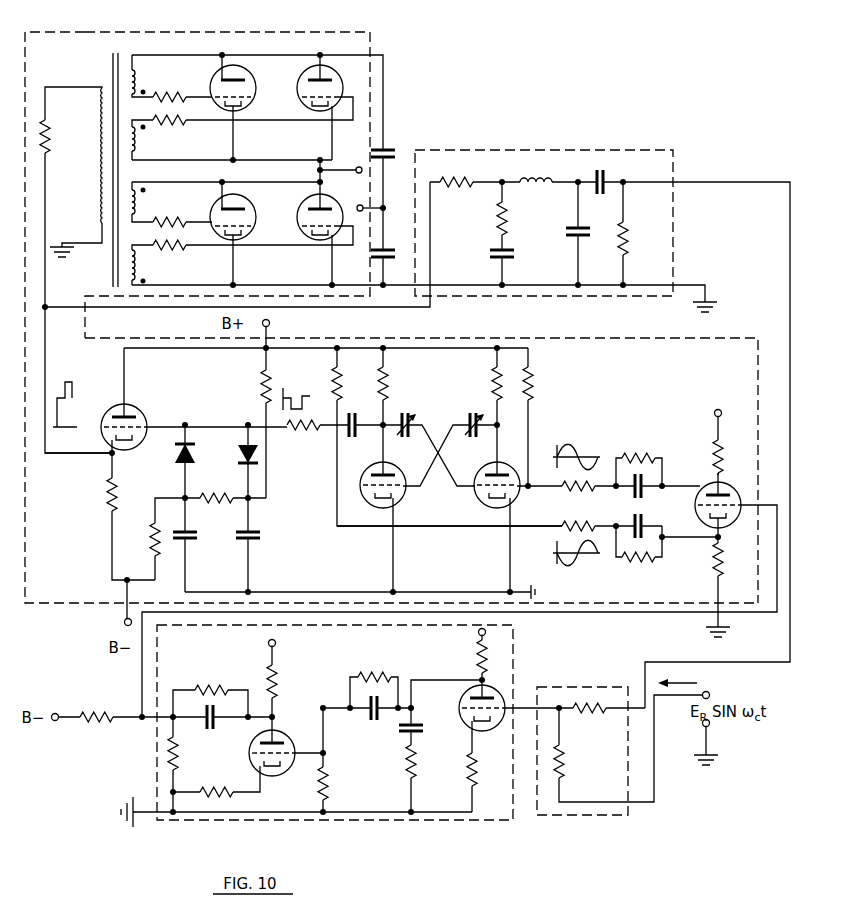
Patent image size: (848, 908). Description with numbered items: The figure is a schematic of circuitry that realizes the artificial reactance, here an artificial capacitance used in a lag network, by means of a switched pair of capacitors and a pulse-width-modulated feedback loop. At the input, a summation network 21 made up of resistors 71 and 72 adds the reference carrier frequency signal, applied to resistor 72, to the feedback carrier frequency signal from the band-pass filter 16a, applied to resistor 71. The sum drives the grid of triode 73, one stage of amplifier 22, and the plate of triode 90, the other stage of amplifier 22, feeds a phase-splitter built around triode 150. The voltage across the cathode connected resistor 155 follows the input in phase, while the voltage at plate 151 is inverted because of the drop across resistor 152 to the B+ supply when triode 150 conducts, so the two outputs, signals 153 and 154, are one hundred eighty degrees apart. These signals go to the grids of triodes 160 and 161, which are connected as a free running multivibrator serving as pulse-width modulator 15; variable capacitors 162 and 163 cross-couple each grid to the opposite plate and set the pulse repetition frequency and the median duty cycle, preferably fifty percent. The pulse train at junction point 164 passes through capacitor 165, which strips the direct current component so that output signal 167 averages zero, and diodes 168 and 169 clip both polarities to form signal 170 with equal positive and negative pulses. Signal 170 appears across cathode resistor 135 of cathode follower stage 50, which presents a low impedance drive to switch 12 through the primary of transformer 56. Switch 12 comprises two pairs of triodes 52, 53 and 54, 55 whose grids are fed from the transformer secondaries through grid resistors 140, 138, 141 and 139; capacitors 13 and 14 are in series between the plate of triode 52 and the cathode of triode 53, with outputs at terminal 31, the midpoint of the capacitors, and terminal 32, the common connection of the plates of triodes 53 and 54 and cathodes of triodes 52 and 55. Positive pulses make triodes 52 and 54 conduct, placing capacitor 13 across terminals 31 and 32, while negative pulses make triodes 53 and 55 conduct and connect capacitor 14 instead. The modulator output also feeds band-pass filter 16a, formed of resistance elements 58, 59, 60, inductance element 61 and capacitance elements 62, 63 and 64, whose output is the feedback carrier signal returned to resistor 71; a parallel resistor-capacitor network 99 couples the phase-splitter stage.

The switch 12 is at (372, 88).
The capacitor 13 is at (396, 152).
The capacitor 14 is at (396, 250).
The pulse-width modulator 15 is at (360, 340).
The band-pass filter 16a is at (510, 153).
The summation network 21 is at (562, 687).
The amplifier 22 is at (511, 654).
The output terminal 31 is at (360, 212).
The output terminal 32 is at (358, 167).
The cathode follower stage 50 is at (138, 408).
The triode 52 is at (338, 82).
The triode 53 is at (312, 238).
The triode 54 is at (246, 90).
The triode 55 is at (246, 215).
The transformer 56 is at (100, 163).
The resistance element 58 is at (456, 188).
The resistance element 59 is at (506, 212).
The resistance element 60 is at (628, 228).
The inductance element 61 is at (534, 188).
The capacitance element 62 is at (490, 253).
The capacitance element 63 is at (568, 234).
The capacitance element 64 is at (600, 194).
The resistor 71 is at (590, 714).
The resistor 72 is at (565, 770).
The triode 73 is at (468, 690).
The triode 90 is at (252, 745).
The RC network 99 is at (638, 455).
The cathode resistor 135 is at (106, 490).
The resistor 138 is at (168, 122).
The resistor 139 is at (168, 247).
The resistor 140 is at (172, 94).
The resistor 141 is at (172, 220).
The triode 150 is at (700, 520).
The plate 151 is at (723, 483).
The resistor 152 is at (714, 448).
The signal 153 is at (565, 452).
The signal 154 is at (553, 558).
The cathode connected resistor 155 is at (713, 565).
The triode 160 is at (478, 496).
The triode 161 is at (372, 470).
The variable capacitor 162 is at (497, 438).
The variable capacitor 163 is at (478, 416).
The junction point 164 is at (410, 414).
The capacitor 165 is at (351, 412).
The output signal 167 is at (290, 388).
The diode 168 is at (238, 453).
The diode 169 is at (175, 456).
The signal 170 is at (77, 393).